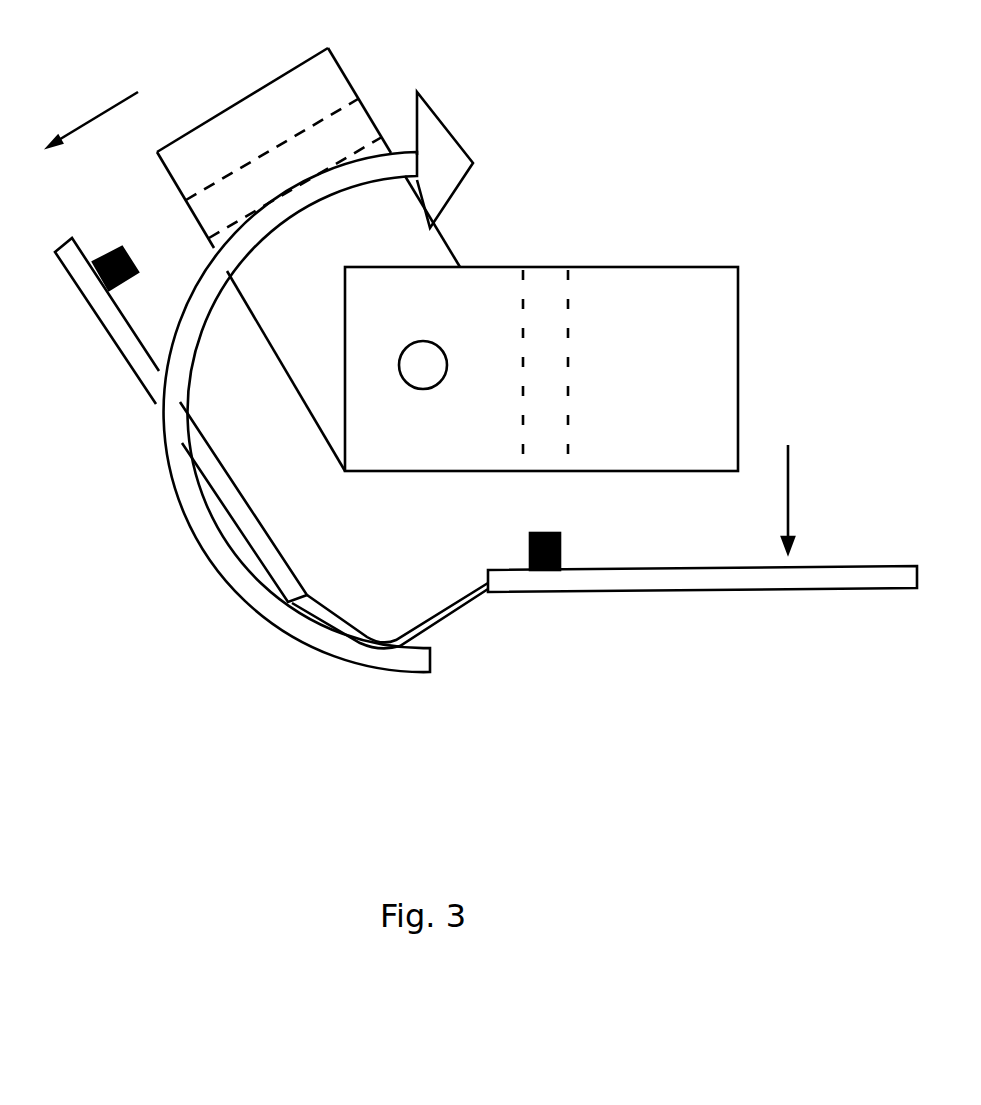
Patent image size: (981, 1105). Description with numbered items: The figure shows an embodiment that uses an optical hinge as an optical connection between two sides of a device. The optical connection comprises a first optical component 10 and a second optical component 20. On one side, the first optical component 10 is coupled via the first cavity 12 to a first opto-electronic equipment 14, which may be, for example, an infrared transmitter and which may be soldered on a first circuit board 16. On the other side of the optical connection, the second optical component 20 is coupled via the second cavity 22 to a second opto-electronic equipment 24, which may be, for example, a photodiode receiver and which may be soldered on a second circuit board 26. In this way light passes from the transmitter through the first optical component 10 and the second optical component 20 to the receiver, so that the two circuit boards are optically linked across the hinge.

The first optical component 10 is at (572, 369).
The first cavity 12 is at (569, 394).
The first opto-electronic equipment 14 is at (508, 546).
The first circuit board 16 is at (702, 617).
The second optical component 20 is at (308, 244).
The second cavity 22 is at (284, 142).
The second opto-electronic equipment 24 is at (112, 239).
The second circuit board 26 is at (181, 420).